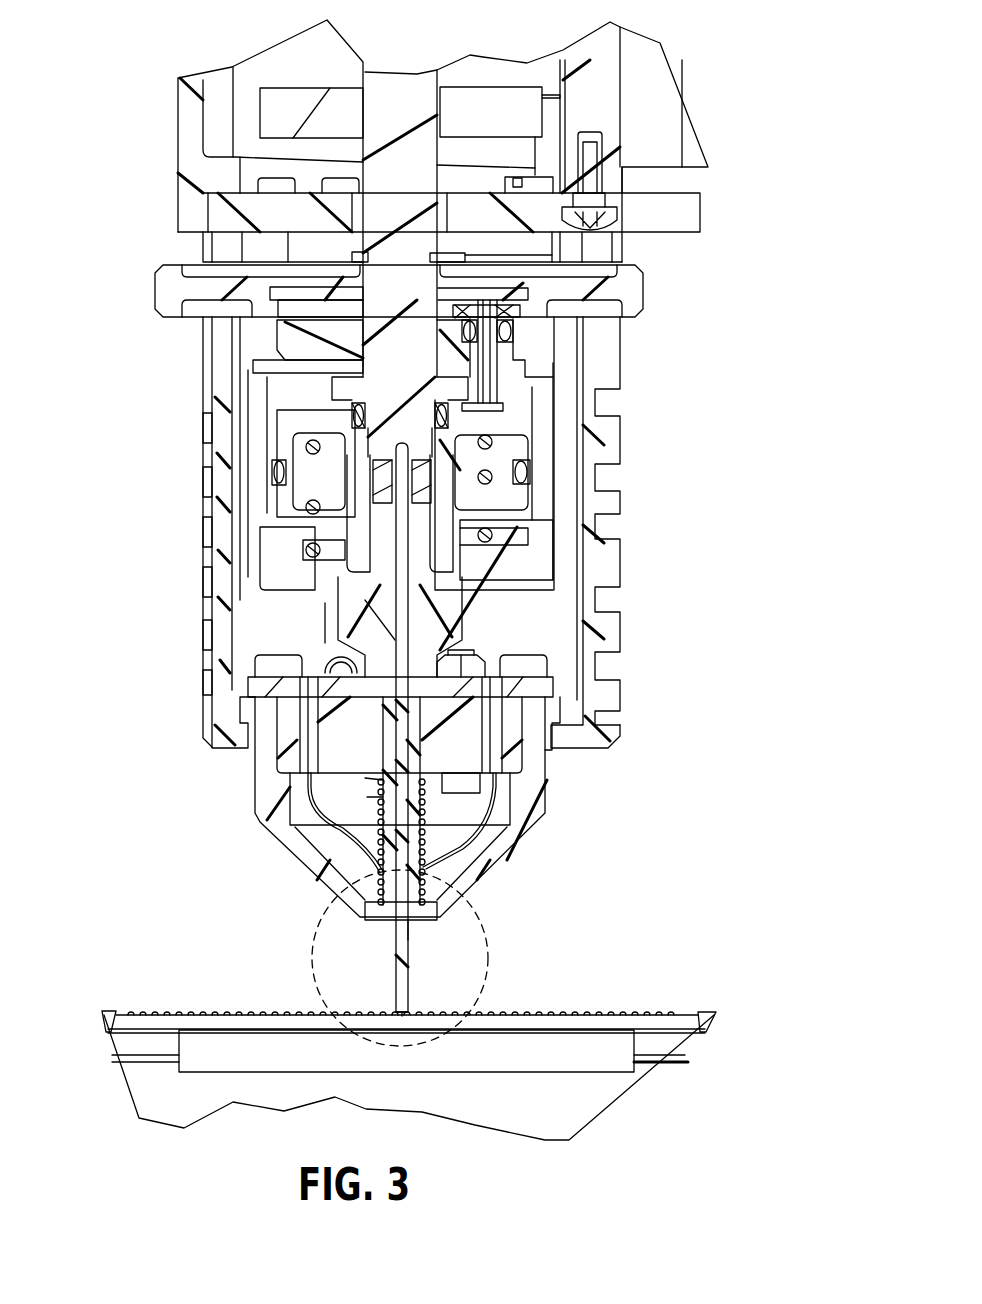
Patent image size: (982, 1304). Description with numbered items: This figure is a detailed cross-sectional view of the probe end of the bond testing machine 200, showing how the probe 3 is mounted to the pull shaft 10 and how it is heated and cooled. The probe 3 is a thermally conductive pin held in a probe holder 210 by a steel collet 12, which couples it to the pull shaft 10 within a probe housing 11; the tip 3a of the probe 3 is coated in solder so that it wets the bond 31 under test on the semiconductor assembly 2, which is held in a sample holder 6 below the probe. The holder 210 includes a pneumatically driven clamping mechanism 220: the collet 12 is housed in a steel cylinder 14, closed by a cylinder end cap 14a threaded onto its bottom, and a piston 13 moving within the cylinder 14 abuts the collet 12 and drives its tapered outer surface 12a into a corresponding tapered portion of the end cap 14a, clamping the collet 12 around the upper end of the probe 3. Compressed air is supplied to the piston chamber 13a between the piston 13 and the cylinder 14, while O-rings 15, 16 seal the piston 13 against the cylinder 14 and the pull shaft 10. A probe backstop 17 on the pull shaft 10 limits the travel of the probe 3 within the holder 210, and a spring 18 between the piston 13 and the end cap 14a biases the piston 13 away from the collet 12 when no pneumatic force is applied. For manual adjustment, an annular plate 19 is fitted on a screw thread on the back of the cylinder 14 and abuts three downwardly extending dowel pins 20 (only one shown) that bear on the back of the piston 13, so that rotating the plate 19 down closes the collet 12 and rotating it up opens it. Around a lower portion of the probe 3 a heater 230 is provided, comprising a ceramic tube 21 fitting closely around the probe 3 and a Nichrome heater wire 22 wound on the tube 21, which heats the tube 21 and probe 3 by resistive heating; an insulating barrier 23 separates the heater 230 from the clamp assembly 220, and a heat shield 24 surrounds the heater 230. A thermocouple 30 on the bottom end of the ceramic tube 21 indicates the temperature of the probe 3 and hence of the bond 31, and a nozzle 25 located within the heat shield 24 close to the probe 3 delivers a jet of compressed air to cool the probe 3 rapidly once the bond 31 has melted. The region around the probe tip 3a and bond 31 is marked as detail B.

The bond testing apparatus 200 is at (135, 62).
The pull shaft 10 is at (360, 72).
The annular plate 19 is at (157, 291).
The dowel pins 20 is at (482, 325).
The probe backstop 17 is at (335, 378).
The O-ring 16 is at (353, 415).
The piston chamber 13a is at (281, 400).
The piston 13 is at (527, 411).
The spring 18 is at (306, 447).
The O-ring 15 is at (274, 470).
The cylinder end cap 14a is at (262, 585).
The cylinder 14 is at (555, 499).
The collet 12 is at (440, 577).
The tapered outer surface 12a is at (367, 618).
The probe housing 11 is at (623, 522).
The probe holder 210 is at (624, 622).
The clamping mechanism 220 is at (485, 655).
The heat shield 24 is at (350, 830).
The heater wire 22 is at (383, 902).
The insulating barrier 23 is at (337, 773).
The nozzle 25 is at (462, 800).
The heater 230 is at (423, 890).
The ceramic tube 21 is at (384, 913).
The thermocouple 30 is at (426, 925).
The probe 3 is at (411, 958).
The detail B is at (314, 960).
The sample holder 6 is at (698, 1013).
The semiconductor assembly 2 is at (506, 1027).
The bond 31 is at (405, 1020).
The tip 3a is at (412, 1016).